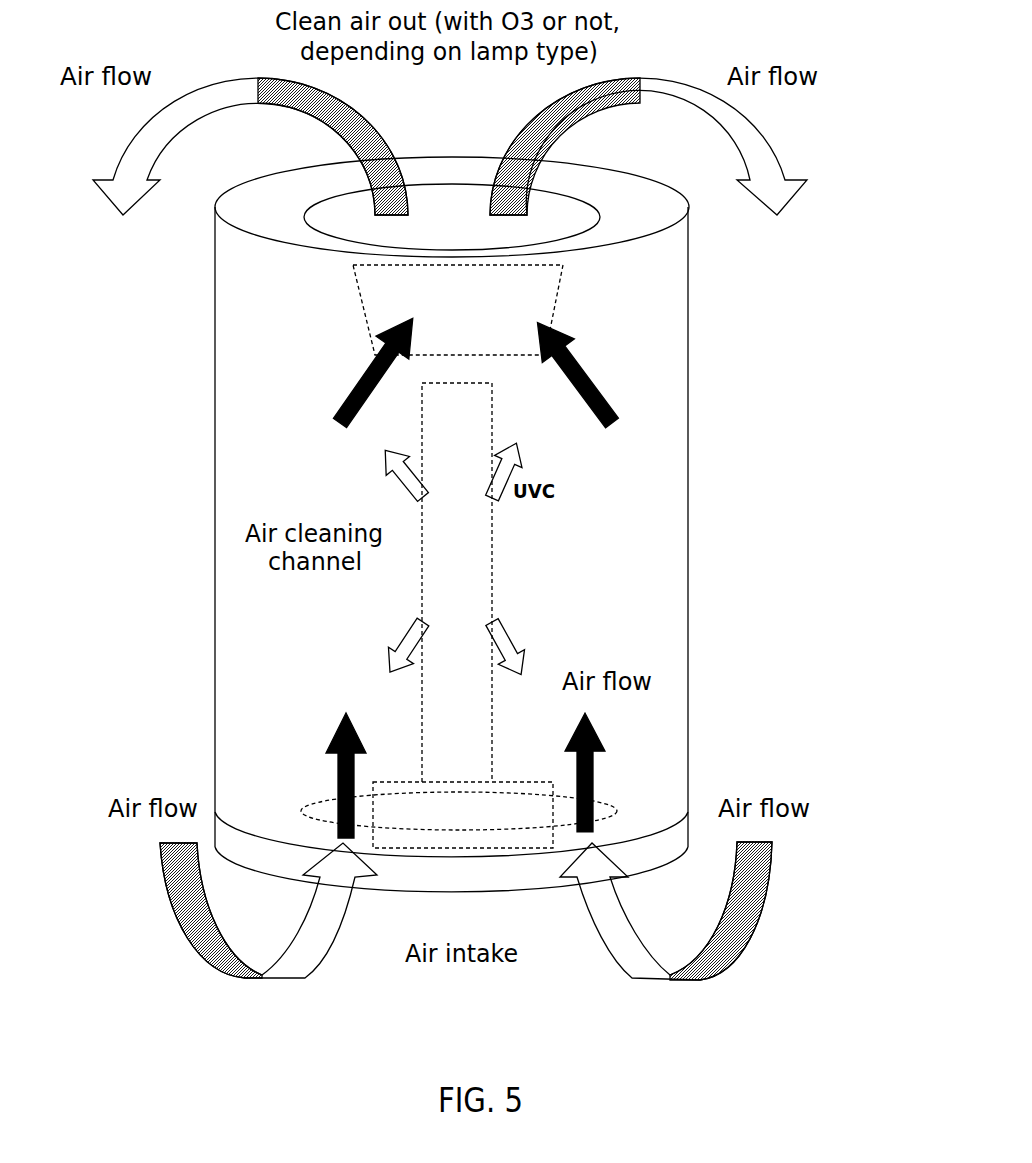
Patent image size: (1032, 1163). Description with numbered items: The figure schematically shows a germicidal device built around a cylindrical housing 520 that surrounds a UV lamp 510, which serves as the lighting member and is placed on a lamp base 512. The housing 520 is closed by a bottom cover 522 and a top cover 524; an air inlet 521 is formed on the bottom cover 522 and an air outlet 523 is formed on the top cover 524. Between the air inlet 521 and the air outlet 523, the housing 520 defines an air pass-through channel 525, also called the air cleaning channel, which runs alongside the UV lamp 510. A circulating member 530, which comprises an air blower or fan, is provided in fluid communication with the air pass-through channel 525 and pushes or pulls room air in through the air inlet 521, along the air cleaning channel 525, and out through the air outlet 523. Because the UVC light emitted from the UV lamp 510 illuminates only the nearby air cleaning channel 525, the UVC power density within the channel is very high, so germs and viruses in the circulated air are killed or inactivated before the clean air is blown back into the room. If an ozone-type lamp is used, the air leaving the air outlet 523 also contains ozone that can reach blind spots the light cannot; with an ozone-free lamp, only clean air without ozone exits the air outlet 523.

The UV lamp 510 is at (455, 667).
The lamp base 512 is at (427, 810).
The housing 520 is at (275, 457).
The air inlet 521 is at (558, 806).
The bottom cover 522 is at (550, 878).
The air outlet 523 is at (565, 192).
The top cover 524 is at (283, 232).
The air pass-through channel 525 is at (650, 497).
The circulating member 530 is at (547, 318).